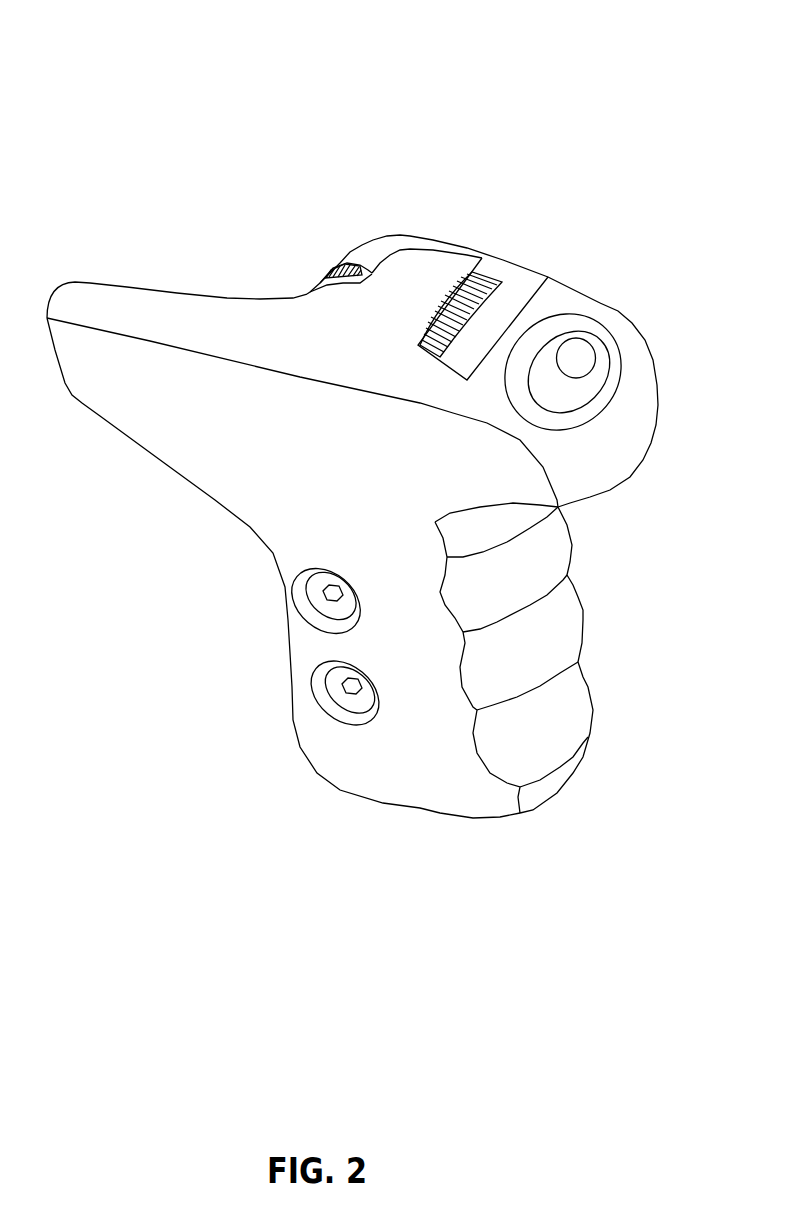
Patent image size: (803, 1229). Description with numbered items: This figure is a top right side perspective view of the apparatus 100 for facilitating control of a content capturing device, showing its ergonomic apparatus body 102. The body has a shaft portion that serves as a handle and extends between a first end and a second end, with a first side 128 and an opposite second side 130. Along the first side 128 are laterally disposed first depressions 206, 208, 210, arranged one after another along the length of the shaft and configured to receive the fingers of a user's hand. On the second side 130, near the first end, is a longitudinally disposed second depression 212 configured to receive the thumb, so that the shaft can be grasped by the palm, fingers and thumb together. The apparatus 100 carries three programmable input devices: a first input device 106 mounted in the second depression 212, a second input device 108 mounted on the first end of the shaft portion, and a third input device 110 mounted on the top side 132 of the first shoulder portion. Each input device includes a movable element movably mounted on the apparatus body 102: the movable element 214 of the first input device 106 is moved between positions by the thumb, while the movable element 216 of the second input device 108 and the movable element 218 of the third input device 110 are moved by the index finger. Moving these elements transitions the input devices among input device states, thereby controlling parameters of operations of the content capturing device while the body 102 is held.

The apparatus 100 is at (385, 409).
The apparatus body 102 is at (366, 550).
The first input device 106 is at (472, 327).
The second input device 108 is at (453, 277).
The third input device 110 is at (593, 361).
The first side 128 is at (560, 652).
The second side 130 is at (285, 620).
The top side 132 is at (560, 440).
The first depression 206 is at (540, 550).
The first depression 208 is at (560, 650).
The first depression 210 is at (560, 723).
The second depression 212 is at (367, 260).
The movable element 214 is at (310, 219).
The movable element 216 is at (463, 302).
The movable element 218 is at (578, 358).